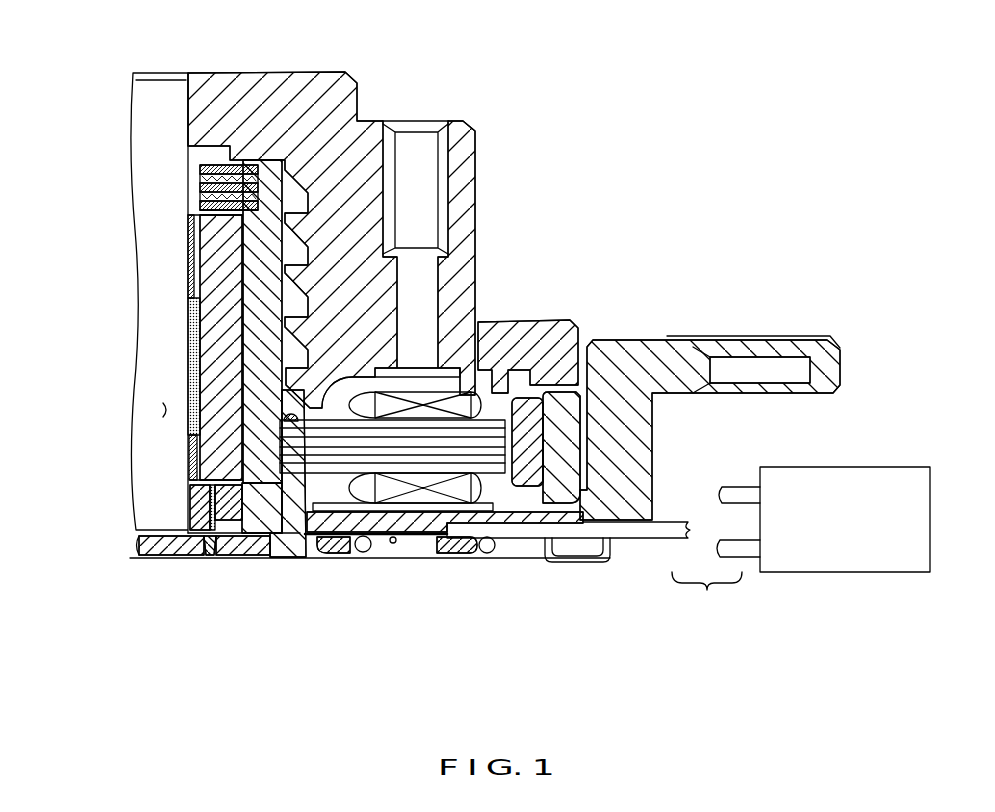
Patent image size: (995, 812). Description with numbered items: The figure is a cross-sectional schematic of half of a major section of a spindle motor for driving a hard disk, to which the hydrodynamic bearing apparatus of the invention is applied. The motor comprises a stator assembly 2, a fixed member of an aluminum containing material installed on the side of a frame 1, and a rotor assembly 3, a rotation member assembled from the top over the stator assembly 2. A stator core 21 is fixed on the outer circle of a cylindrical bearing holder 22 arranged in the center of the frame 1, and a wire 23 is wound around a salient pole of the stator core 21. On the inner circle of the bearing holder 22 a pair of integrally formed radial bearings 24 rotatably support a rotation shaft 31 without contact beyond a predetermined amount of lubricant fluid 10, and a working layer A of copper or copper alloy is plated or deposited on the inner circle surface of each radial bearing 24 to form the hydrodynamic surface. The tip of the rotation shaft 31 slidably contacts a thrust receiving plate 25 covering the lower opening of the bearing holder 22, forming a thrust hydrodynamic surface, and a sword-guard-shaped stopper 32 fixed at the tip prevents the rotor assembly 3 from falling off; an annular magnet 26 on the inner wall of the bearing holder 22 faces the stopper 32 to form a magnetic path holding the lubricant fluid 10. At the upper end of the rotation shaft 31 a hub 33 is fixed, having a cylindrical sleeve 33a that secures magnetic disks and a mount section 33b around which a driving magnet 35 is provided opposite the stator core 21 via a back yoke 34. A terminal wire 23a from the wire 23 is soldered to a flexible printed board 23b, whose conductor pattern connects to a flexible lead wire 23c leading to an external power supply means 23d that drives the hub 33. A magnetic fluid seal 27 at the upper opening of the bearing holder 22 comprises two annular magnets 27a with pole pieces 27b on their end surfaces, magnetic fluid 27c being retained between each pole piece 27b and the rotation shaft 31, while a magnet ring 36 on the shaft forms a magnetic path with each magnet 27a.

The frame 1 is at (637, 467).
The stator assembly 2 is at (326, 492).
The rotor assembly 3 is at (484, 193).
The lubricant fluid 10 is at (135, 392).
The stator core 21 is at (485, 457).
The bearing holder 22 is at (260, 343).
The wire 23 is at (477, 387).
The terminal wire 23a is at (363, 551).
The flexible printed board 23b is at (433, 536).
The flexible lead wire 23c is at (667, 539).
The power supply means 23d is at (801, 528).
The radial bearing 24 is at (210, 273).
The thrust receiving plate 25 is at (163, 551).
The annular magnet 26 is at (257, 531).
The magnetic fluid seal 27 is at (88, 280).
The magnet 27a is at (200, 175).
The pole piece 27b is at (200, 167).
The magnetic fluid 27c is at (200, 184).
The rotation shaft 31 is at (167, 408).
The stopper 32 is at (187, 521).
The hub 33 is at (307, 91).
The sleeve 33a is at (455, 281).
The mount section 33b is at (565, 336).
The back yoke 34 is at (587, 434).
The driving magnet 35 is at (527, 477).
The magnet ring 36 is at (198, 200).
The working layer A is at (190, 257).